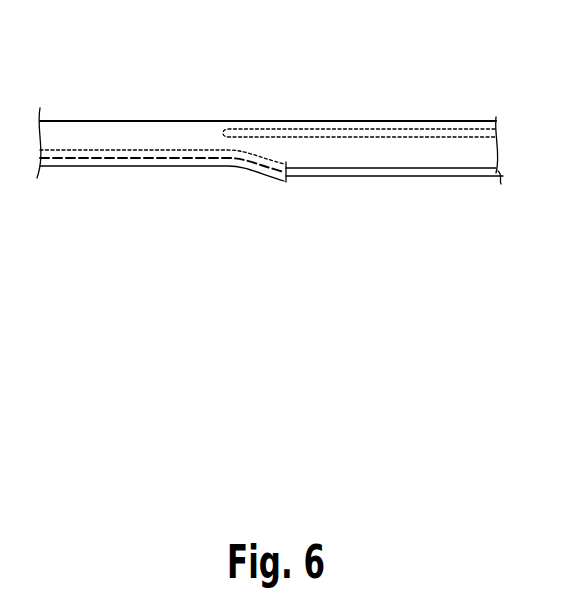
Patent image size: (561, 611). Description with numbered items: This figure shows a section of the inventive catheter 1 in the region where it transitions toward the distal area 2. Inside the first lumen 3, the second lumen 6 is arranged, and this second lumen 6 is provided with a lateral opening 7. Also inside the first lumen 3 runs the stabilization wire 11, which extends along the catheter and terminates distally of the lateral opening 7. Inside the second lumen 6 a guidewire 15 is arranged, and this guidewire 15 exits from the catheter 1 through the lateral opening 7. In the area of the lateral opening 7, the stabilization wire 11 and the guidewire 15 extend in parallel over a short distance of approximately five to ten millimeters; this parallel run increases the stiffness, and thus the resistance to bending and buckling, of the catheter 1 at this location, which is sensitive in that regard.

The catheter 1 is at (257, 221).
The distal area 2 is at (104, 121).
The first lumen 3 is at (379, 121).
The second lumen 6 is at (102, 166).
The lateral opening 7 is at (286, 182).
The stabilization wire 11 is at (455, 132).
The guidewire 15 is at (450, 178).